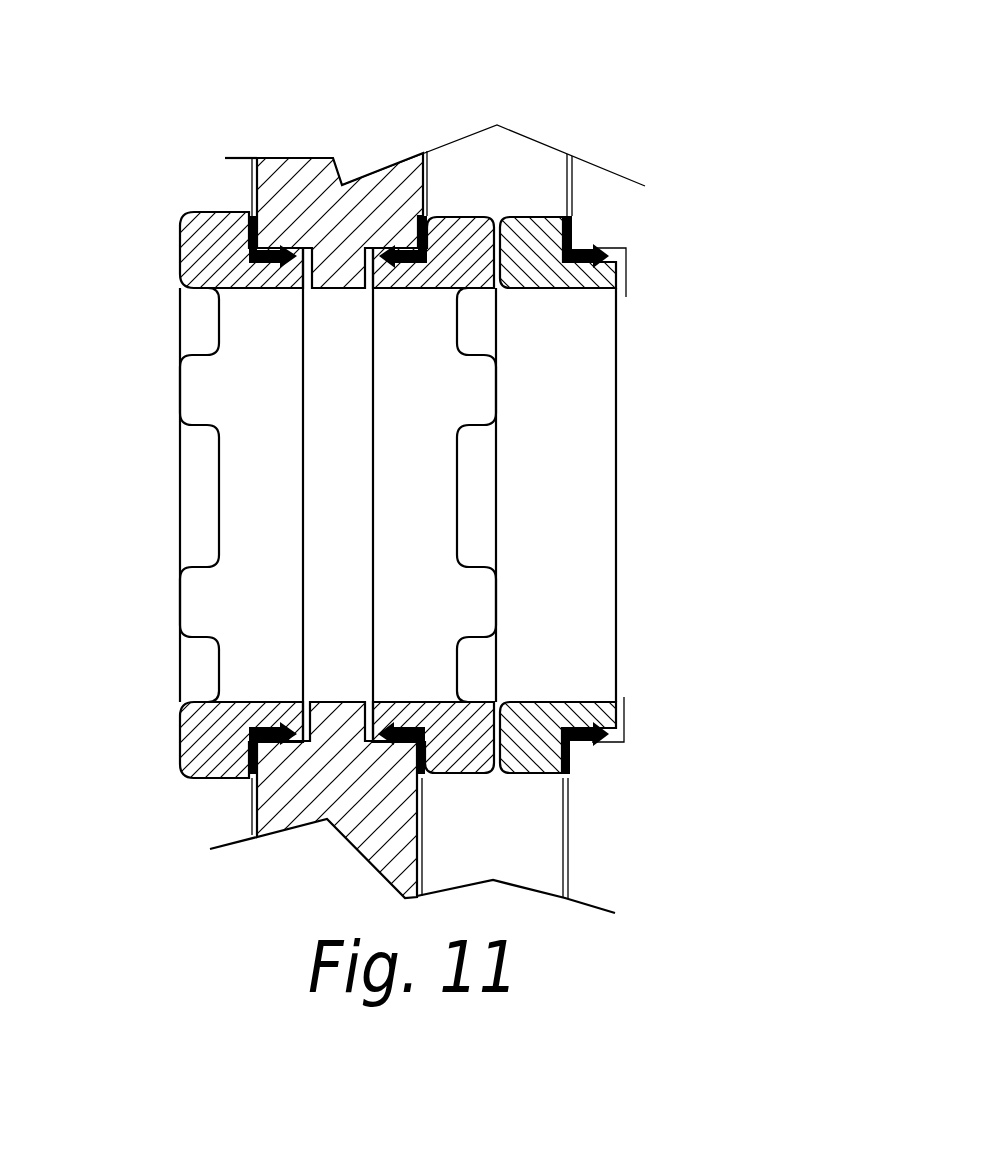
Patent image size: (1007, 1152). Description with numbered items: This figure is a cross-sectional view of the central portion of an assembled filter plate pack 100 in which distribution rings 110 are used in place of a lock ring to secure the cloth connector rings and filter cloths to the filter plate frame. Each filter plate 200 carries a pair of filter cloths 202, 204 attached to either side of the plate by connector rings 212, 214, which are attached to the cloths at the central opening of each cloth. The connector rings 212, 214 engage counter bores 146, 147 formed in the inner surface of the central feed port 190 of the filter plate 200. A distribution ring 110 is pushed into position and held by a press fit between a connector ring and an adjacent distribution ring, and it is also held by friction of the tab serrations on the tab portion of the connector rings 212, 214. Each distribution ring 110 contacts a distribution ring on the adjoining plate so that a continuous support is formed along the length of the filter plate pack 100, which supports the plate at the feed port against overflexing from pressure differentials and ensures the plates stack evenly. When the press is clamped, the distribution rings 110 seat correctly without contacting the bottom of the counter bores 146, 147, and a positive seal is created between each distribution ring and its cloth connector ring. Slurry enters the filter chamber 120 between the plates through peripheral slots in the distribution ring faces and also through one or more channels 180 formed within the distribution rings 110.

The filter plate pack 100 is at (593, 47).
The distribution ring 110 is at (168, 241).
The filter chamber 120 is at (497, 126).
The counter bore 146 is at (371, 246).
The counter bore 147 is at (303, 245).
The channel 180 is at (497, 420).
The central feed port 190 is at (168, 470).
The filter plate 200 is at (316, 148).
The filter cloth 202 is at (426, 180).
The filter cloth 204 is at (252, 178).
The connector ring 212 is at (400, 247).
The connector ring 214 is at (250, 220).